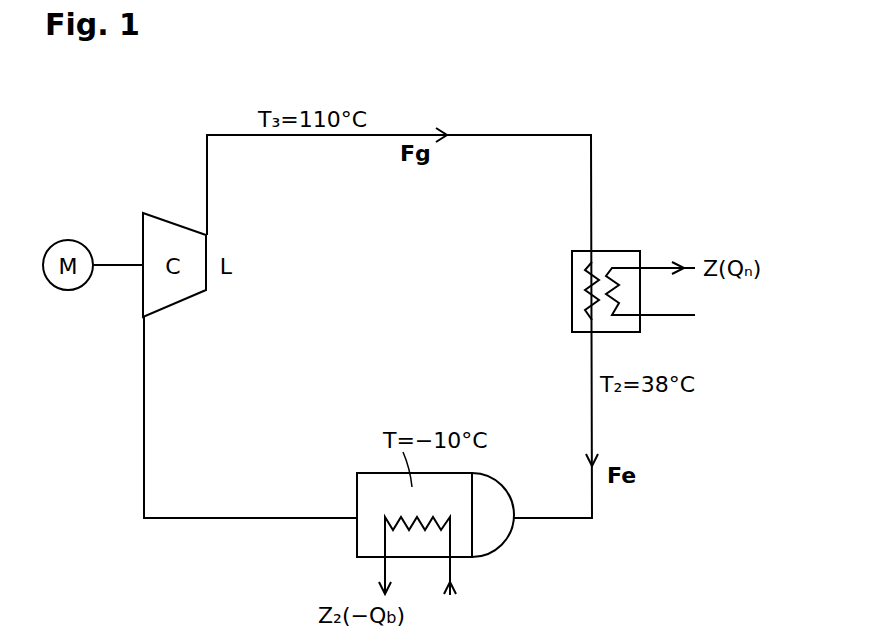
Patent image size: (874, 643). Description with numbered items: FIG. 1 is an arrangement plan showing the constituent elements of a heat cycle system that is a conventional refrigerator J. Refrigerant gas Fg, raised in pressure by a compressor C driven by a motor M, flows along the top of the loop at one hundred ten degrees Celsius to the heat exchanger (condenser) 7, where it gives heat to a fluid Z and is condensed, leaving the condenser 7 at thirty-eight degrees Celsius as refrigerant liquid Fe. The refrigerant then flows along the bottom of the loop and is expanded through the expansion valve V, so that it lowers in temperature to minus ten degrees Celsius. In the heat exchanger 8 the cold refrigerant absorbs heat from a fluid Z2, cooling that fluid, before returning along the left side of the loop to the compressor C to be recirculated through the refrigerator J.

The heat exchanger (condenser) 7 is at (623, 251).
The heat exchanger (evaporator) 8 is at (357, 488).
The refrigerator J is at (487, 122).
The expansion valve V is at (500, 530).